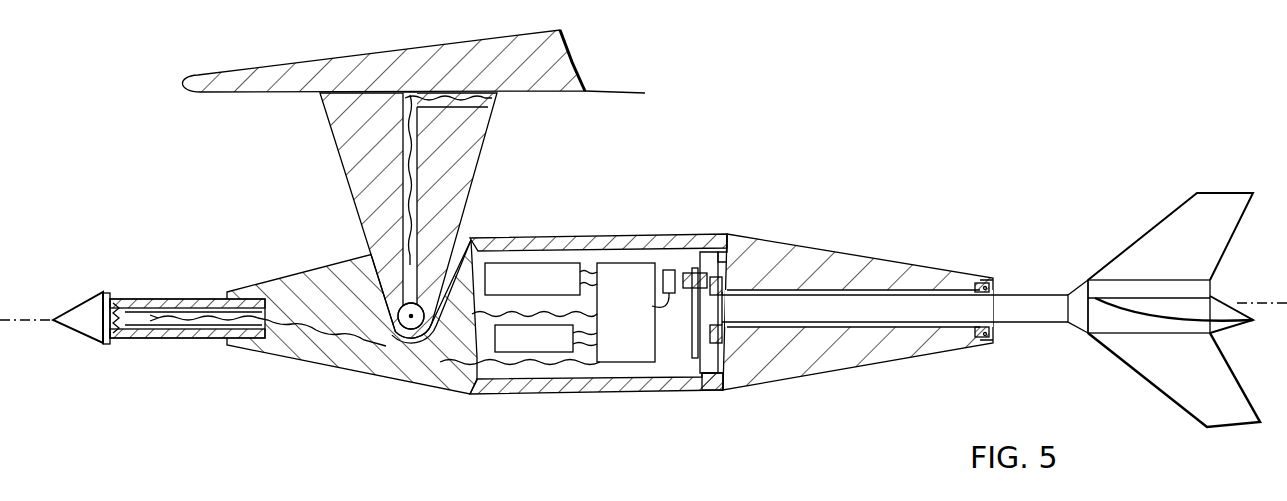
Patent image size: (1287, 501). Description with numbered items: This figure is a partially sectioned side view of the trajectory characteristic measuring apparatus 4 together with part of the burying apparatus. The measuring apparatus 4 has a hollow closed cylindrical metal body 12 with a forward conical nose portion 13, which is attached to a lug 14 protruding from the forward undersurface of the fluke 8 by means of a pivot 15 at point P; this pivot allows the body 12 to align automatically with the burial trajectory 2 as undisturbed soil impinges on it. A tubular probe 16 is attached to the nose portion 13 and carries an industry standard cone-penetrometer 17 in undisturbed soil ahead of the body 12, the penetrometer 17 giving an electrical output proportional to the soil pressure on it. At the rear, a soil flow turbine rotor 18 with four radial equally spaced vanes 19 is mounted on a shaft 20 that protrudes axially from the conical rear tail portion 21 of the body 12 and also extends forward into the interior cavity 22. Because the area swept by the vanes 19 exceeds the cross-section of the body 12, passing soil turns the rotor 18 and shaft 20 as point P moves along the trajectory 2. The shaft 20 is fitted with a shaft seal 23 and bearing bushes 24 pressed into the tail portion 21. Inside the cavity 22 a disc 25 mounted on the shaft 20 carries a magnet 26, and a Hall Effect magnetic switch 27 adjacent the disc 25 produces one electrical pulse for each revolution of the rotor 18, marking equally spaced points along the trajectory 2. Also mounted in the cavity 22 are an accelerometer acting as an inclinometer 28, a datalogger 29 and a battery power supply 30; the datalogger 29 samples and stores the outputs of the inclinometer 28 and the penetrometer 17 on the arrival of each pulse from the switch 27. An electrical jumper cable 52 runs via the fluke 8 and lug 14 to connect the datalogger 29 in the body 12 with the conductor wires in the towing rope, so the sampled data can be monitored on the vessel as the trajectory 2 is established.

The burial trajectory 2 is at (37, 320).
The trajectory characteristic measuring apparatus 4 is at (843, 150).
The fluke 8 is at (198, 80).
The hollow closed cylindrical metal body 12 is at (505, 237).
The forward conical nose portion 13 is at (332, 368).
The lug 14 is at (358, 170).
The pivot 15 is at (403, 333).
The point P is at (412, 330).
The tubular probe 16 is at (203, 338).
The cone-penetrometer 17 is at (90, 330).
The soil flow turbine rotor 18 is at (1213, 332).
The radial equally spaced vanes 19 is at (1125, 307).
The shaft 20 is at (908, 305).
The conical rear tail portion 21 is at (840, 245).
The interior cavity 22 is at (688, 345).
The shaft seal 23 is at (989, 290).
The bearing bushes 24 is at (722, 285).
The disc 25 is at (712, 375).
The magnet 26 is at (693, 268).
The Hall Effect magnetic switch 27 is at (668, 268).
The inclinometer 28 is at (546, 338).
The datalogger 29 is at (626, 312).
The battery power supply 30 is at (541, 279).
The electrical jumper cable 52 is at (586, 91).